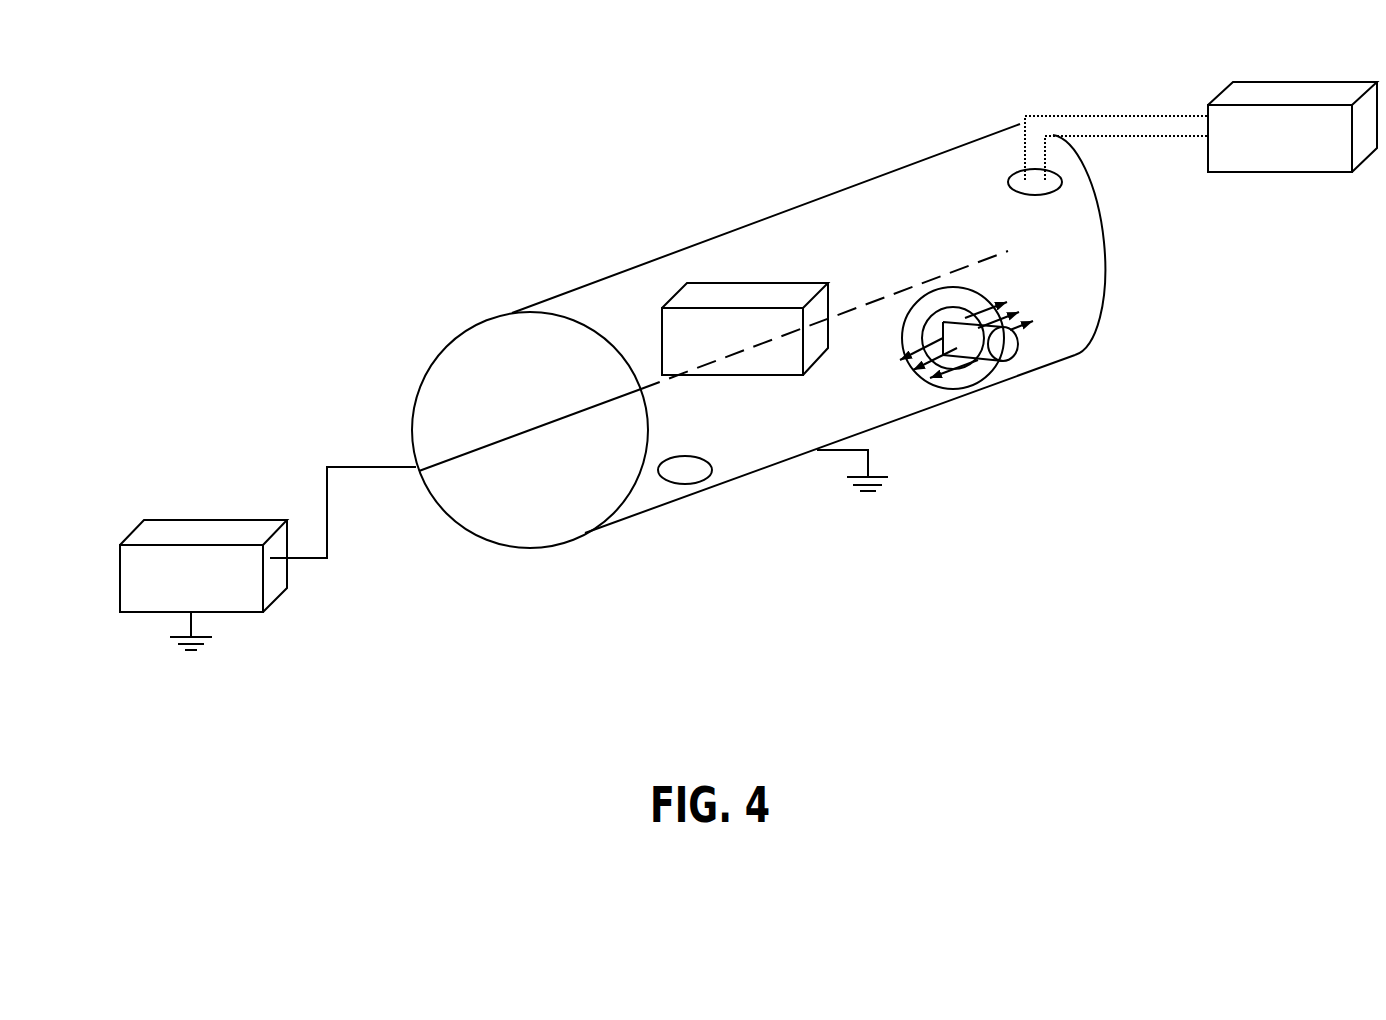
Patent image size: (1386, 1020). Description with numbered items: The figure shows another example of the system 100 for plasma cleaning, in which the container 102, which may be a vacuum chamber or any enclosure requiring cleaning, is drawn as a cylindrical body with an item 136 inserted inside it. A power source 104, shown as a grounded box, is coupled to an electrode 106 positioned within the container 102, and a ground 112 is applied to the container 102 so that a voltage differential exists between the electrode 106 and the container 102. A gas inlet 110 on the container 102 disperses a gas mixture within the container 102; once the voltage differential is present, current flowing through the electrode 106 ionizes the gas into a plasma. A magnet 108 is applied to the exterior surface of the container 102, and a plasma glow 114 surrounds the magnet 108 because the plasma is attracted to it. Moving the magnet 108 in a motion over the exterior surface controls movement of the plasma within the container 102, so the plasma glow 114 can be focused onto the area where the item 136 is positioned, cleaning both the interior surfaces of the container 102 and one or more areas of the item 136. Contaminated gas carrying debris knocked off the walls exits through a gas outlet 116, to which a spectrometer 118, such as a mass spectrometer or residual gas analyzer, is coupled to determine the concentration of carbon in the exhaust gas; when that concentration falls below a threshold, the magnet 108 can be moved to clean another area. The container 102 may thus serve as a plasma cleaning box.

The system 100 is at (328, 207).
The container 102 is at (627, 263).
The power source 104 is at (193, 510).
The electrode 106 is at (975, 255).
The magnet 108 is at (1010, 357).
The gas inlet 110 is at (685, 493).
The ground 112 is at (878, 453).
The plasma glow 114 is at (902, 328).
The gas outlet 116 is at (1043, 203).
The spectrometer 118 is at (1272, 76).
The item 136 is at (777, 281).